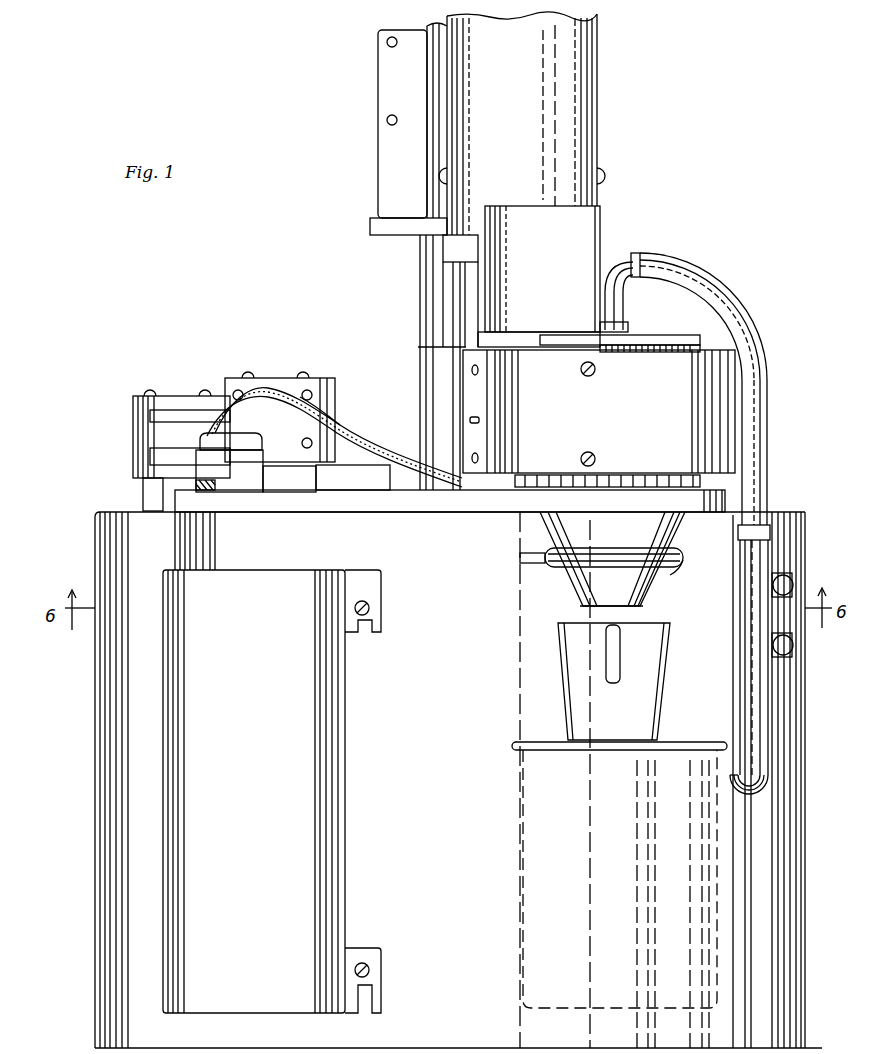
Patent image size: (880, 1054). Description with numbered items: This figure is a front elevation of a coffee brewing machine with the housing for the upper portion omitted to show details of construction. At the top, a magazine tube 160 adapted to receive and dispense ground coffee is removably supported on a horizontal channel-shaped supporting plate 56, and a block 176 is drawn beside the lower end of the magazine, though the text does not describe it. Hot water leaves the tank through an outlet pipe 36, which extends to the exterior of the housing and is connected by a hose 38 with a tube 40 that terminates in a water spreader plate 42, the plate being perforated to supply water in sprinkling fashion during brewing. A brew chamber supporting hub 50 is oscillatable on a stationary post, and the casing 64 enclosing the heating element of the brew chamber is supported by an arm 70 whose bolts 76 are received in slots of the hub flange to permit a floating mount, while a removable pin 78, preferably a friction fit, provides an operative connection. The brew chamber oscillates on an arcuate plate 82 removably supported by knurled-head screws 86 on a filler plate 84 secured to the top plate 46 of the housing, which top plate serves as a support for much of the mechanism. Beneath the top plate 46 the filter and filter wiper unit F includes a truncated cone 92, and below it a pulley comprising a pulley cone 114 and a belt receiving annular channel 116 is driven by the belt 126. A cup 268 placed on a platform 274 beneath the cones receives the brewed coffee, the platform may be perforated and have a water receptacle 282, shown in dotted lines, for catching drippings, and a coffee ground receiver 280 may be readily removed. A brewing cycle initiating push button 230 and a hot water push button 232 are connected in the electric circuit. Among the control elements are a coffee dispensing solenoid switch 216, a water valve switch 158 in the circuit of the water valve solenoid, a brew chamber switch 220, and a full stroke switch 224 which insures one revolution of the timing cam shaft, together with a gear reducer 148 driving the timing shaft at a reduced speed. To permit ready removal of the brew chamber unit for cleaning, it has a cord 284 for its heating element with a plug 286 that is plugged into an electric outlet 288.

The magazine tube 160 is at (597, 82).
The horizontal channel-shaped supporting plate 56 is at (372, 219).
The valve block 176 is at (600, 243).
The tube 40 is at (623, 298).
The hose 38 is at (744, 300).
The water spreader plate 42 is at (660, 336).
The brew chamber supporting hub 50 is at (420, 350).
The casing 64 is at (742, 401).
The arm 70 is at (559, 411).
The removable pin 78 is at (468, 418).
The bolts 76 is at (480, 458).
The filler plate 84 is at (368, 500).
The top plate 46 is at (100, 512).
The outlet pipe 36 is at (765, 538).
The coffee ground receiver 280 is at (345, 860).
The truncated cone 92 is at (545, 525).
The belt 126 is at (522, 558).
The belt receiving annular channel 116 is at (668, 570).
The pulley cone 114 is at (641, 600).
The filter and filter wiper unit F is at (560, 580).
The cup 268 is at (575, 745).
The platform 274 is at (520, 752).
The water receptacle 282 is at (522, 815).
The brewing cycle initiating push button 230 is at (790, 580).
The hot water push button 232 is at (792, 650).
The coffee dispensing solenoid switch 216 is at (135, 398).
The full stroke switch 224 is at (140, 448).
The water valve switch 158 is at (334, 380).
The plug 286 is at (262, 438).
The electric outlet 288 is at (248, 484).
The knurled-head screws 86 is at (215, 484).
The gear reducer 148 is at (365, 488).
The arcuate plate 82 is at (148, 492).
The cord 284 is at (275, 392).
The brew chamber switch 220 is at (335, 440).